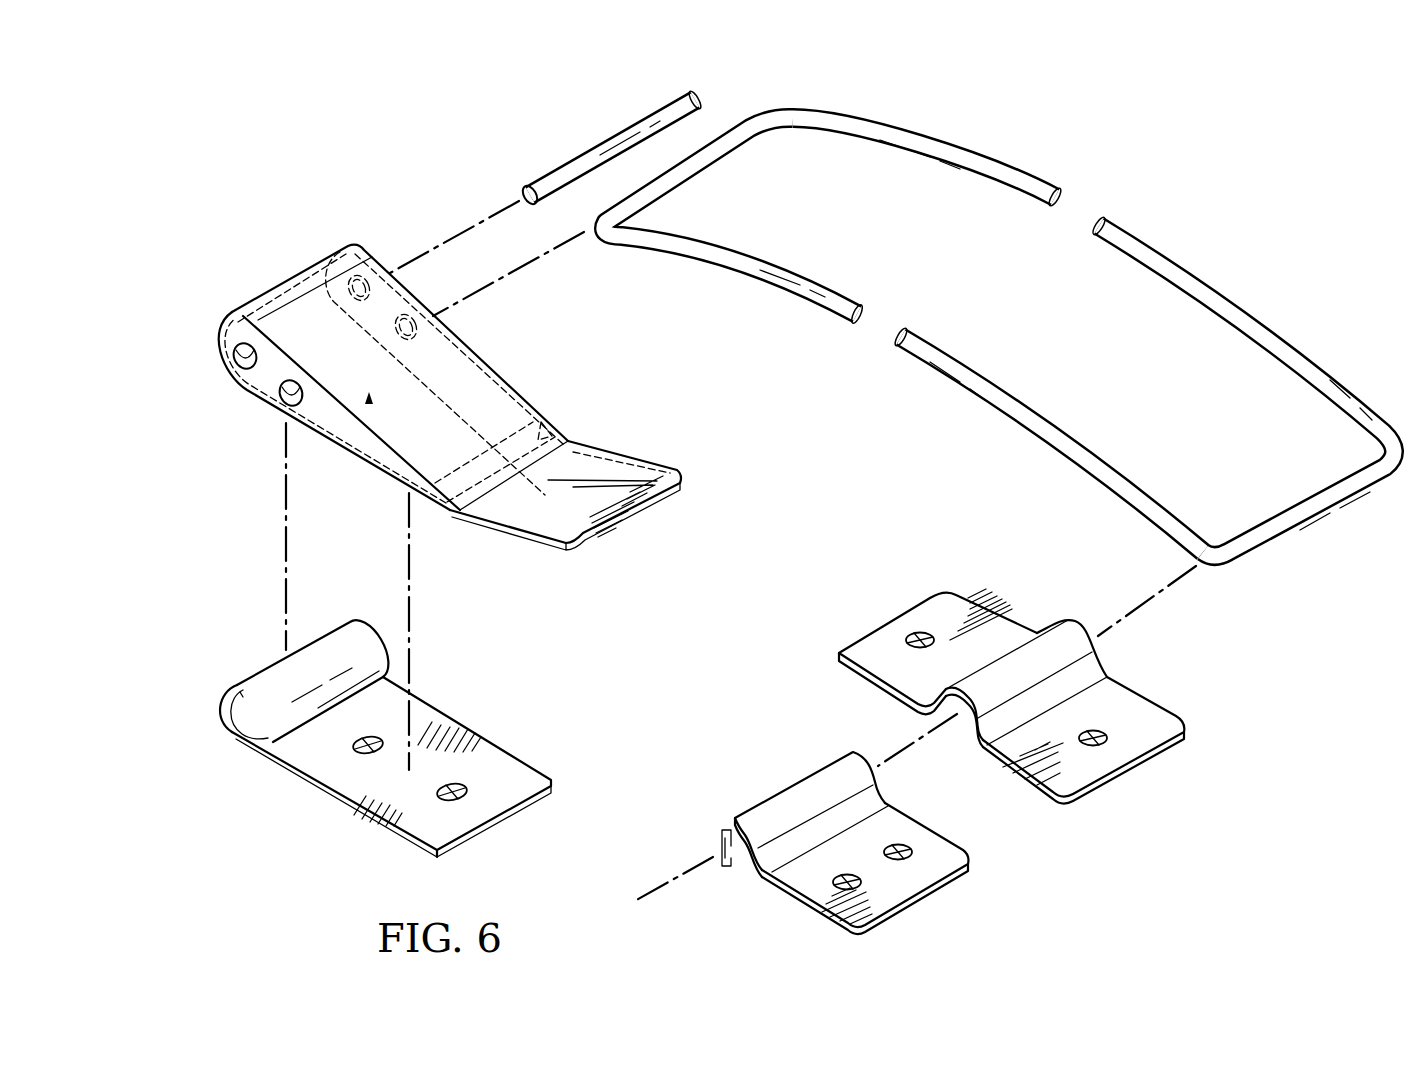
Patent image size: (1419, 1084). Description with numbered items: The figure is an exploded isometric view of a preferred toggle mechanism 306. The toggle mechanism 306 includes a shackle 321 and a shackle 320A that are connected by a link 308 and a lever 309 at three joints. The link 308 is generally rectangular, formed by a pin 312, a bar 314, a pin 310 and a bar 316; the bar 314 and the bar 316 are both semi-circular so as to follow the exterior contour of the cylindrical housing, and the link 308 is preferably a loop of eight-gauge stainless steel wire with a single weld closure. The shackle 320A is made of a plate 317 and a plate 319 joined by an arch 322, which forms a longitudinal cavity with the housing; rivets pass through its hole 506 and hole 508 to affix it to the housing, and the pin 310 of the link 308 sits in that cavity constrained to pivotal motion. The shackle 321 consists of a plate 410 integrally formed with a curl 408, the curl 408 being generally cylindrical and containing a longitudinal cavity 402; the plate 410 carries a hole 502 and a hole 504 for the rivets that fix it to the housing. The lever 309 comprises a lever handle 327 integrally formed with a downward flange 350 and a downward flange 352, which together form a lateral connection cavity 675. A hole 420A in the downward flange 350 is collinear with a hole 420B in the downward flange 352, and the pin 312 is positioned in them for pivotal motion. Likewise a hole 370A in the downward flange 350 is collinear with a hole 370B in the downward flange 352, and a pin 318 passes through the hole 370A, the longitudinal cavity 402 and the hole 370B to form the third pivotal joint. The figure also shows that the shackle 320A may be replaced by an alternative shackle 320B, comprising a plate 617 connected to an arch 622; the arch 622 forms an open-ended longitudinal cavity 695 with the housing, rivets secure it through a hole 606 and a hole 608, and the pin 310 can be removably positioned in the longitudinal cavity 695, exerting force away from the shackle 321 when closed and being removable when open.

The toggle mechanism 306 is at (762, 501).
The link 308 is at (999, 322).
The lever 309 is at (405, 365).
The pin 310 is at (1242, 394).
The pin 312 is at (734, 221).
The bar 314 is at (928, 162).
The bar 316 is at (1048, 439).
The plate 317 is at (930, 649).
The pin 318 is at (611, 146).
The plate 319 is at (1098, 734).
The shackle 320A is at (1018, 694).
The shackle 320B is at (828, 845).
The shackle 321 is at (377, 721).
The arch 322 is at (1032, 655).
The lever handle 327 is at (565, 475).
The downward flange 350 is at (415, 377).
The downward flange 352 is at (295, 411).
The hole 370A is at (363, 242).
The hole 370B is at (195, 369).
The longitudinal cavity 402 is at (213, 722).
The curl 408 is at (312, 652).
The plate 410 is at (414, 767).
The hole 420A is at (474, 328).
The hole 420B is at (245, 415).
The hole 502 is at (306, 773).
The hole 504 is at (488, 749).
The hole 506 is at (905, 600).
The hole 508 is at (1121, 691).
The hole 606 is at (789, 903).
The hole 608 is at (912, 811).
The plate 617 is at (877, 863).
The arch 622 is at (811, 803).
The lateral connection cavity 675 is at (343, 457).
The longitudinal cavity 695 is at (697, 844).